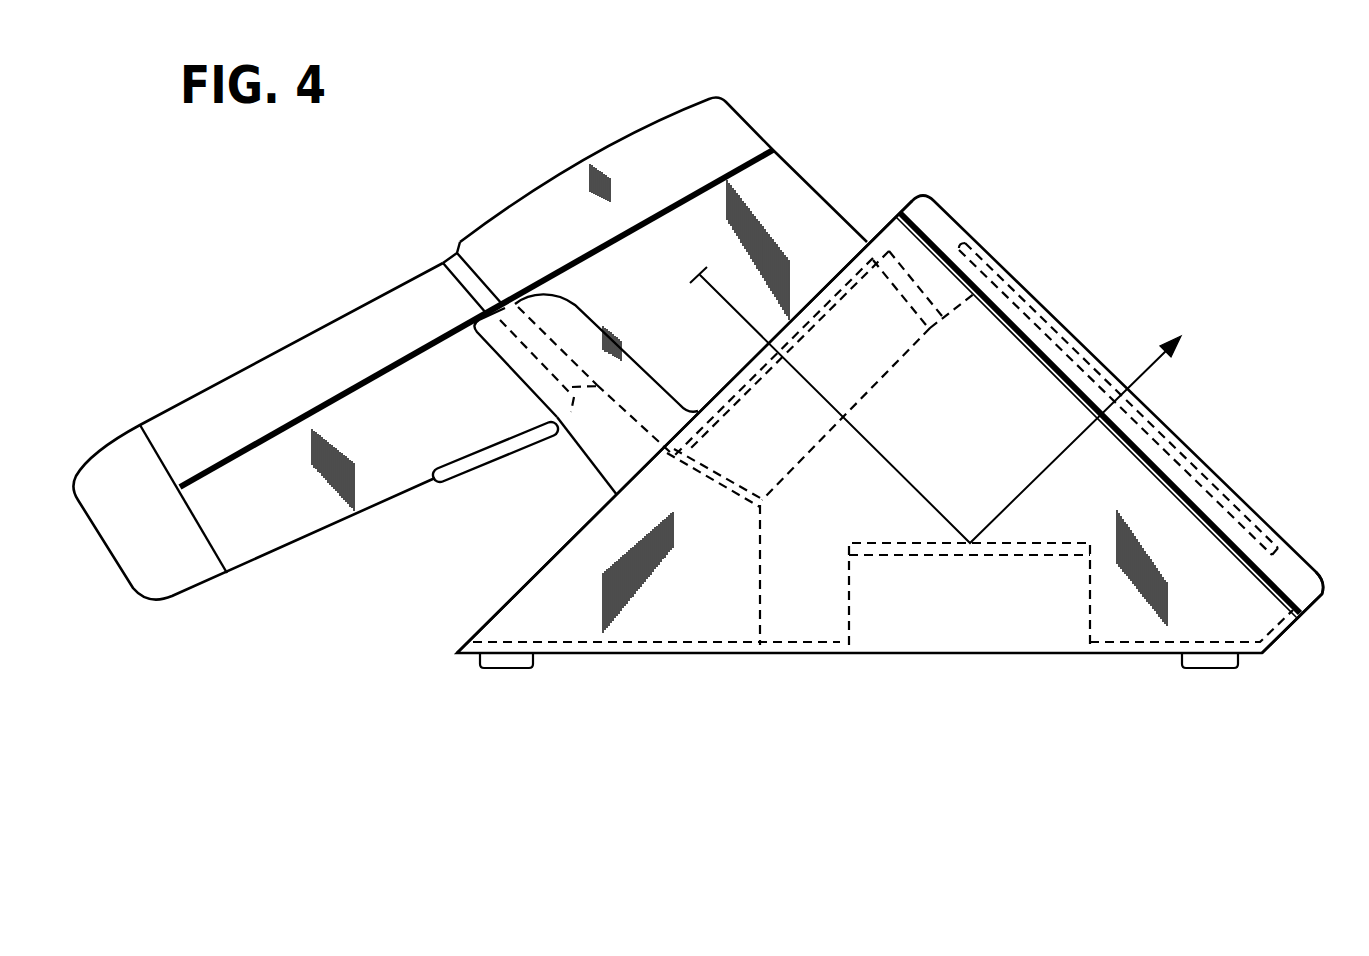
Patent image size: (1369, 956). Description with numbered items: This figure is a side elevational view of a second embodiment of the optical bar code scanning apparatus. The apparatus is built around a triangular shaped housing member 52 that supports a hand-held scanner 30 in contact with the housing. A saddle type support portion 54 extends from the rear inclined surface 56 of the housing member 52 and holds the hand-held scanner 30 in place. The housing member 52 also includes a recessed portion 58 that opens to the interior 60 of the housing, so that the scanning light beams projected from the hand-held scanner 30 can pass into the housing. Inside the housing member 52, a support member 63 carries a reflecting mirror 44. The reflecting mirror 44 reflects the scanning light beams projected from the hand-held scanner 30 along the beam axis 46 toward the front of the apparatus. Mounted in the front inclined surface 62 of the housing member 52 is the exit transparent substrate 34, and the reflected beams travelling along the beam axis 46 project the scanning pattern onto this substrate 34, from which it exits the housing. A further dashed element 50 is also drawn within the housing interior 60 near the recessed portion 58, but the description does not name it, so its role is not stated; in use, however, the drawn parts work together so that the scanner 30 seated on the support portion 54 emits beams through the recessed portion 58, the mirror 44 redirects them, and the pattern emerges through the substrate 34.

The hand-held scanner 30 is at (563, 166).
The exit transparent substrate 34 is at (1040, 297).
The reflecting mirror 44 is at (1030, 543).
The beam axis 46 is at (1133, 380).
The optical assembly housing 50 is at (880, 388).
The housing member 52 is at (618, 655).
The saddle type support portion 54 is at (593, 457).
The rear inclined surface 56 is at (524, 583).
The recessed portion 58 is at (903, 292).
The interior 60 is at (800, 620).
The front inclined surface 62 is at (1306, 558).
The support member 63 is at (1103, 630).